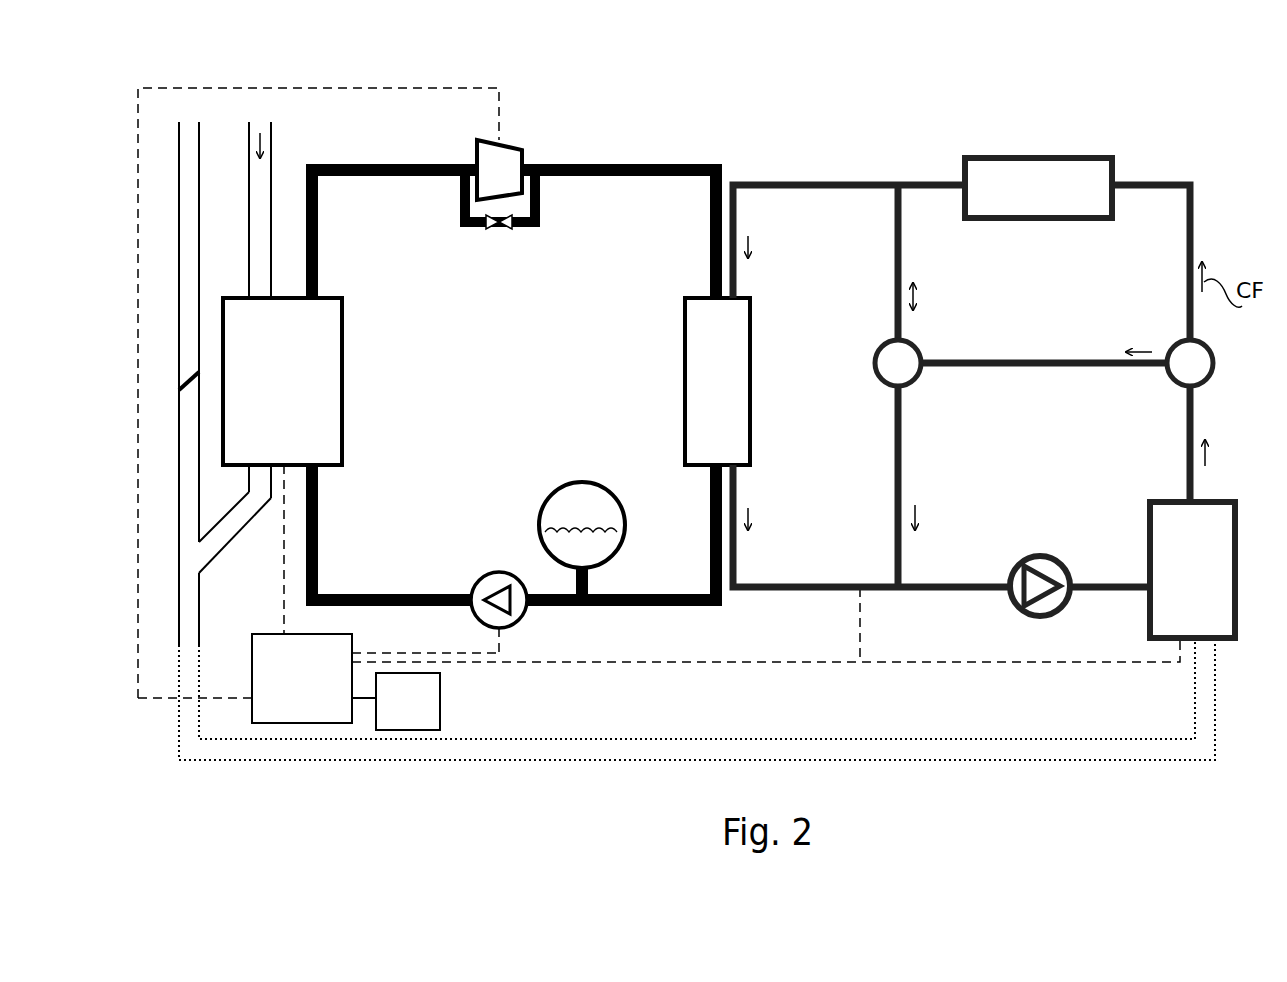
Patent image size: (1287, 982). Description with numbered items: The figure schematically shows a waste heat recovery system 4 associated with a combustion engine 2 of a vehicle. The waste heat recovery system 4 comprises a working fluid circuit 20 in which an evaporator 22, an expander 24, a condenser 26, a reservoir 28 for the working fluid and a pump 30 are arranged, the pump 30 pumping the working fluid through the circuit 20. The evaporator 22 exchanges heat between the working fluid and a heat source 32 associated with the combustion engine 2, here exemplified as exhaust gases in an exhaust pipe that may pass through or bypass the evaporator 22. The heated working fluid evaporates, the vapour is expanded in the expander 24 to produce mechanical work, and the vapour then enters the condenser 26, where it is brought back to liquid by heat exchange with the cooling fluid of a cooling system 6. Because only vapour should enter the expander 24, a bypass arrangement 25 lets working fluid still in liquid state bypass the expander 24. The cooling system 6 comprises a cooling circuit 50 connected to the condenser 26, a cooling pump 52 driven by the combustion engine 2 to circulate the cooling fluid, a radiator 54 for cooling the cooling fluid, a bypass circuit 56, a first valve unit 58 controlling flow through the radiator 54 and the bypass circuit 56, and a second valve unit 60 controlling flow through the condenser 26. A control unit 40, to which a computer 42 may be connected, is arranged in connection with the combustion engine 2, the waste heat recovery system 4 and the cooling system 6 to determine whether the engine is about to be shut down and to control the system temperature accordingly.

The combustion engine 2 is at (1192, 570).
The waste heat recovery system 4 is at (709, 76).
The cooling system 6 is at (923, 168).
The working fluid circuit 20 is at (650, 168).
The evaporator 22 is at (344, 378).
The expander 24 is at (508, 143).
The bypass arrangement 25 is at (486, 228).
The condenser 26 is at (685, 374).
The reservoir 28 is at (542, 504).
The pump 30 is at (478, 580).
The heat source 32 is at (192, 610).
The control unit 40 is at (716, 655).
The computer 42 is at (408, 701).
The cooling circuit 50 is at (818, 184).
The cooling pump 52 is at (1040, 616).
The radiator 54 is at (1030, 158).
The bypass circuit 56 is at (1050, 366).
The first valve unit 58 is at (1178, 384).
The second valve unit 60 is at (876, 364).